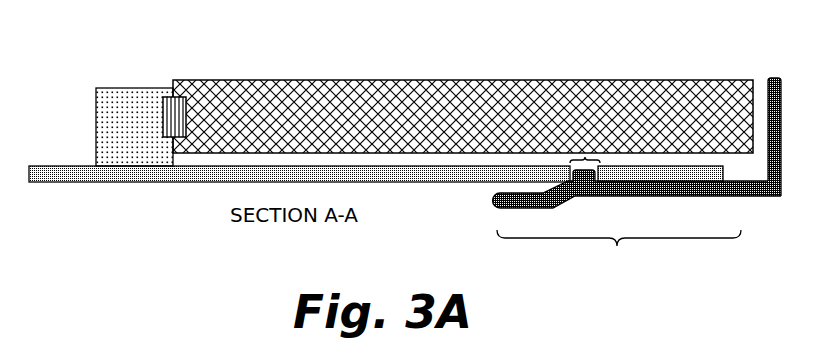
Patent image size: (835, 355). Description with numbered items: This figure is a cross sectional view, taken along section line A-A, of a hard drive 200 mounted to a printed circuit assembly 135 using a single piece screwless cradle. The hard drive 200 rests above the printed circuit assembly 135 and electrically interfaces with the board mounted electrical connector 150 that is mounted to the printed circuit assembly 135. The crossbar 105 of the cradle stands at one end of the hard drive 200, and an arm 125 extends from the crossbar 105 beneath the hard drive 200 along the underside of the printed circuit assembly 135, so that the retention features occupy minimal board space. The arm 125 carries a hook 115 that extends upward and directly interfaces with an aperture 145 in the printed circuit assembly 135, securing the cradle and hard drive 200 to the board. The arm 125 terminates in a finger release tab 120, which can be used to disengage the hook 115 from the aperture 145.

The crossbar 105 is at (777, 100).
The hook 115 is at (586, 180).
The finger release tab 120 is at (495, 200).
The arm 125 is at (619, 251).
The printed circuit assembly 135 is at (143, 183).
The aperture 145 is at (584, 157).
The board mounted electrical connector 150 is at (128, 115).
The hard drive 200 is at (494, 126).